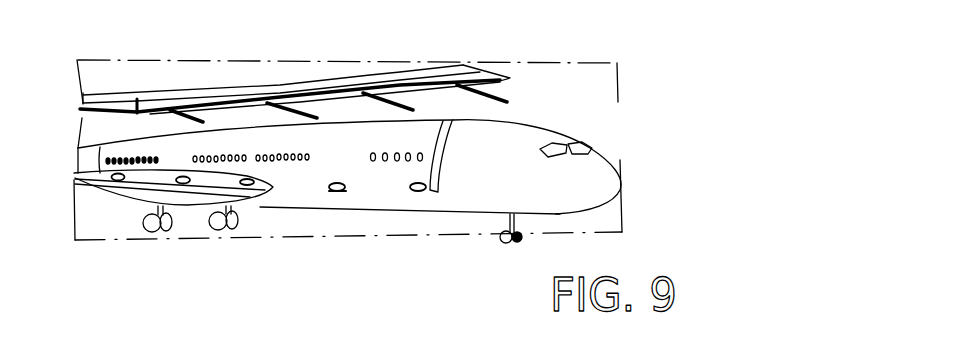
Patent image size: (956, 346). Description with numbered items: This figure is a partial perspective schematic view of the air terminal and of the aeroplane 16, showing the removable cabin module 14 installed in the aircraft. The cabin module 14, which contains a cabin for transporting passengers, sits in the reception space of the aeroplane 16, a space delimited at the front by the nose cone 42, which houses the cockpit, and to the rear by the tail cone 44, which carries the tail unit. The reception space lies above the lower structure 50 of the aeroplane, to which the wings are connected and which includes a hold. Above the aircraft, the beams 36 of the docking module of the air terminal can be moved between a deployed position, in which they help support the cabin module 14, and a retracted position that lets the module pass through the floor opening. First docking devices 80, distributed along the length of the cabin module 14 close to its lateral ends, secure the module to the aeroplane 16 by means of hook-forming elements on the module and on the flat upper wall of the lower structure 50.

The removable cabin module 14 is at (172, 162).
The aeroplane 16 is at (588, 133).
The beams 36 is at (497, 93).
The nose cone 42 is at (523, 168).
The tail cone 44 is at (80, 159).
The lower structure 50 is at (347, 192).
The first devices for docking 80 is at (118, 188).